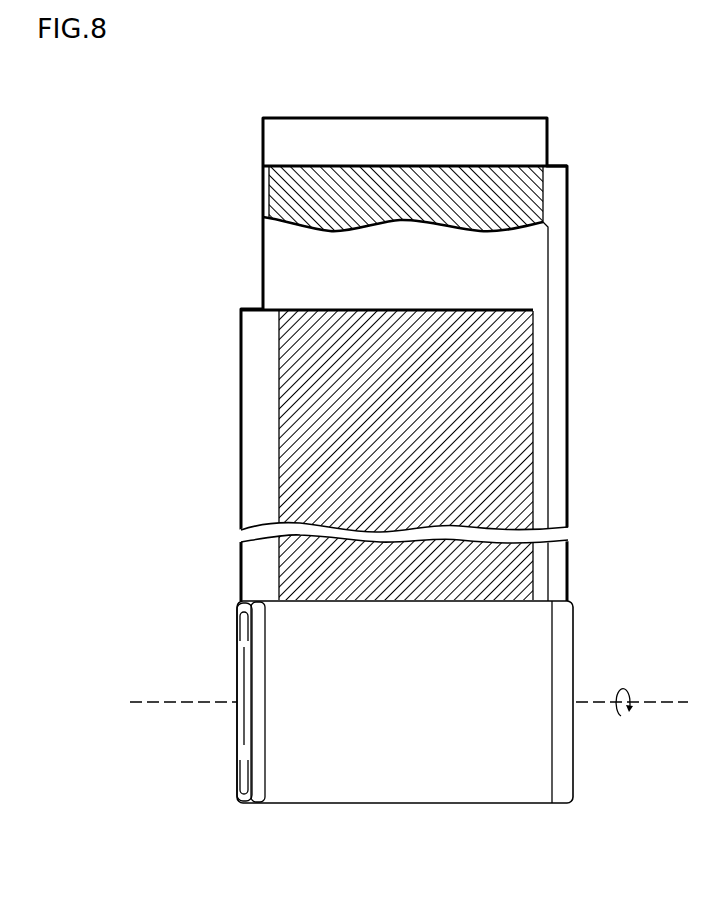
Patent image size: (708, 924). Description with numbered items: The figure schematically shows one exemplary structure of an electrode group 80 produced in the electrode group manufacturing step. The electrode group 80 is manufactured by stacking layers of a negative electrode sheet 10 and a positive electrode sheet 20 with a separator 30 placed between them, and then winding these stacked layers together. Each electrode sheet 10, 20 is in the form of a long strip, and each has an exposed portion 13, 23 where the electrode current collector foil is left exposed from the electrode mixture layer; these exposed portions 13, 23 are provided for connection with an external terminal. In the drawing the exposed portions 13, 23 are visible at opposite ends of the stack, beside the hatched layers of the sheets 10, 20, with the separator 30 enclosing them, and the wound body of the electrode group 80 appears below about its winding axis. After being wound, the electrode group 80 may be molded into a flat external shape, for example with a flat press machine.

The negative electrode sheet 10 is at (483, 190).
The exposed portion 13 is at (555, 218).
The positive electrode sheet 20 is at (352, 322).
The exposed portion 23 is at (263, 356).
The separator 30 is at (298, 116).
The electrode group 80 is at (602, 827).